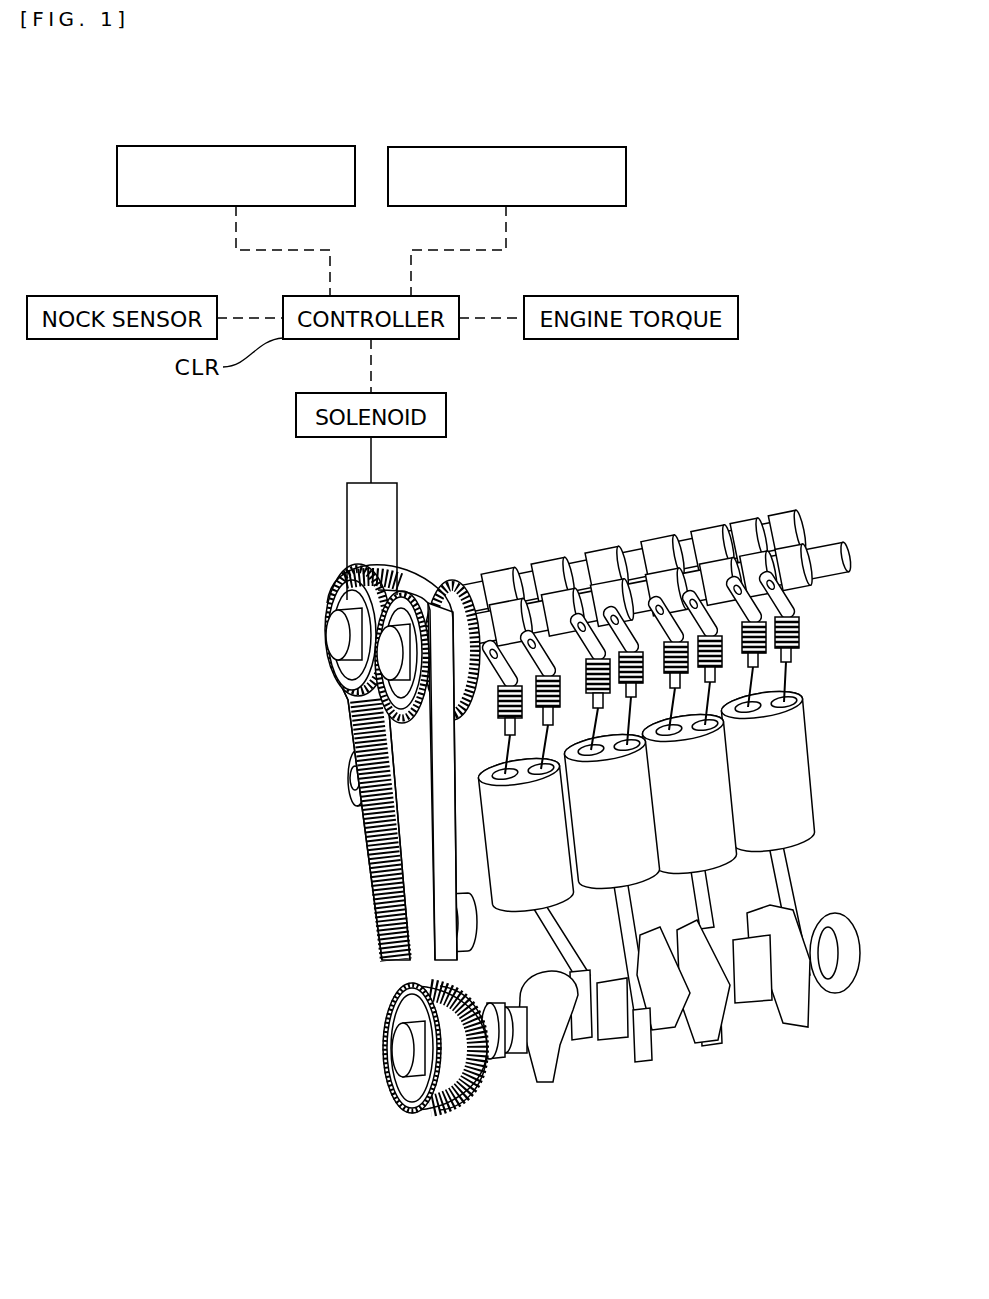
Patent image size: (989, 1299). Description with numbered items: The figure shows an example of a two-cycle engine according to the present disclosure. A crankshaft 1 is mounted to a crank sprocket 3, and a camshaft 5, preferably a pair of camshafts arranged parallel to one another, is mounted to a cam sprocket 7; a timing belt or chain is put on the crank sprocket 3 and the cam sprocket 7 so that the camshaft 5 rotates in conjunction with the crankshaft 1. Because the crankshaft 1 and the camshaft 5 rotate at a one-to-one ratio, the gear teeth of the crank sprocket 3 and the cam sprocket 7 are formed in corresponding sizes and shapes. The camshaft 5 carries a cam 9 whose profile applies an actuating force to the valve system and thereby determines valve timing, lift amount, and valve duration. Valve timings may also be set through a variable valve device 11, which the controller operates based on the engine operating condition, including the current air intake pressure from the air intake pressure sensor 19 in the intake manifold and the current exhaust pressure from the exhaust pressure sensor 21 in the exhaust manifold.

The crankshaft 1 is at (505, 1067).
The crank sprocket 3 is at (480, 1100).
The camshaft 5 is at (653, 546).
The cam sprocket 7 is at (373, 570).
The cam 9 is at (530, 580).
The variable valve device 11 is at (402, 650).
The air intake pressure sensor 19 is at (217, 146).
The exhaust pressure sensor 21 is at (534, 147).